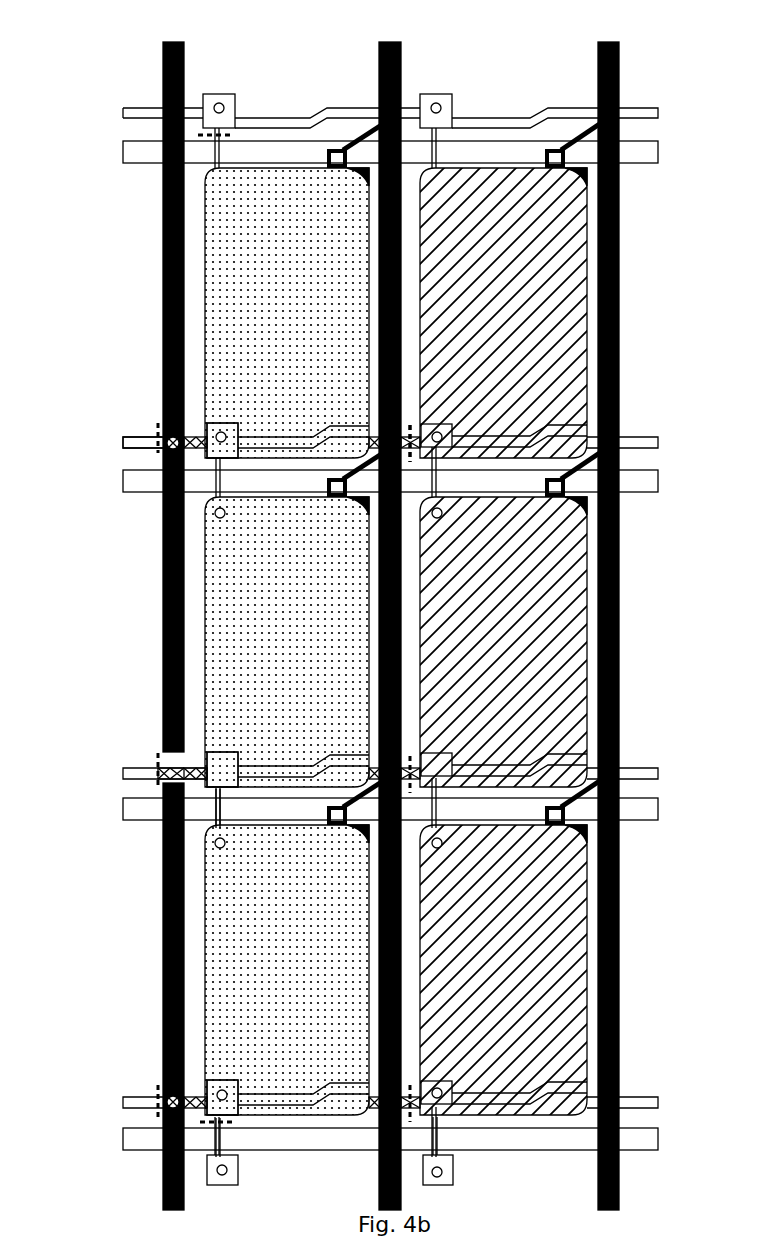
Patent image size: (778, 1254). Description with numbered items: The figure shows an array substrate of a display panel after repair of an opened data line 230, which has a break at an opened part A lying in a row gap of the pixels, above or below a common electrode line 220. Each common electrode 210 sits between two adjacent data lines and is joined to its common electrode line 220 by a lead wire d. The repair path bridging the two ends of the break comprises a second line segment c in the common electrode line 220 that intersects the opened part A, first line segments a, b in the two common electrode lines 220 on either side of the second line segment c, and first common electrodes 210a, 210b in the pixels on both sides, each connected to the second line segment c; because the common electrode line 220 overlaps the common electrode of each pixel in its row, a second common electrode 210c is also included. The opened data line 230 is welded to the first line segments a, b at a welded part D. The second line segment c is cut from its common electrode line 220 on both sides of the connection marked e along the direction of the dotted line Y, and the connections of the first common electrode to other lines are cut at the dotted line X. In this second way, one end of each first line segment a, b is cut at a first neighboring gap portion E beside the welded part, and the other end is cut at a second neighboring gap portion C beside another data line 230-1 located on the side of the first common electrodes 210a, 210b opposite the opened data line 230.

The data line 230 is at (182, 57).
The another data line 230-1 is at (400, 53).
The common electrode 210 is at (572, 372).
The first common electrode 210a is at (233, 623).
The first common electrode 210b is at (233, 970).
The second common electrode 210c is at (232, 277).
The common electrode line 220 is at (630, 445).
The dotted line X is at (233, 135).
The dotted line Y is at (158, 1090).
The opened part A is at (173, 760).
The second neighboring gap portion C is at (412, 420).
The welded part D is at (158, 438).
The first neighboring gap portion E is at (143, 458).
The first line segment a is at (262, 455).
The first line segment b is at (262, 1110).
The second line segment c is at (263, 777).
The lead wire d is at (437, 147).
The mark e is at (214, 777).